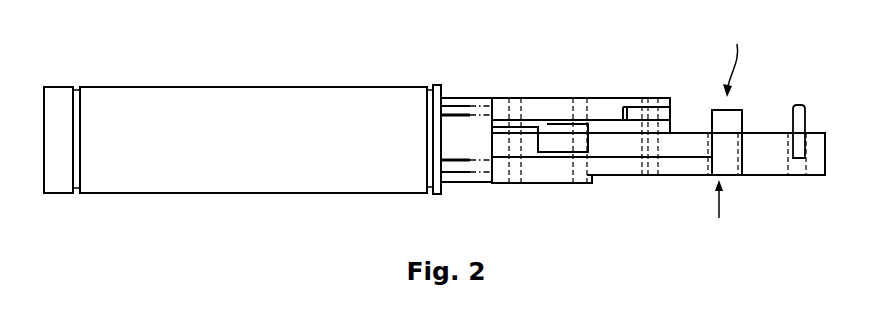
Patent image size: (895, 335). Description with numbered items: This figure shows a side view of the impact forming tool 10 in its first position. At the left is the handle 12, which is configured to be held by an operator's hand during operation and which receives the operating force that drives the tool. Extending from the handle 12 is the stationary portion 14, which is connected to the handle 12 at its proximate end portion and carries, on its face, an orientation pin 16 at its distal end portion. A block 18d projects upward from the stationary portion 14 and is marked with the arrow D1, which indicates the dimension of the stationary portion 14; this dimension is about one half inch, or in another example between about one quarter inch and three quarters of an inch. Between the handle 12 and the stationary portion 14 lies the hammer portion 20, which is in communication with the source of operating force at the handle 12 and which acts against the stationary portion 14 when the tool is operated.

The impact forming tool 10 is at (587, 82).
The handle 12 is at (226, 87).
The stationary portion 14 is at (818, 153).
The orientation pin 16 is at (806, 120).
The block 18d is at (735, 120).
The hammer portion 20 is at (611, 103).
The dimension of the stationary portion D1 is at (734, 60).